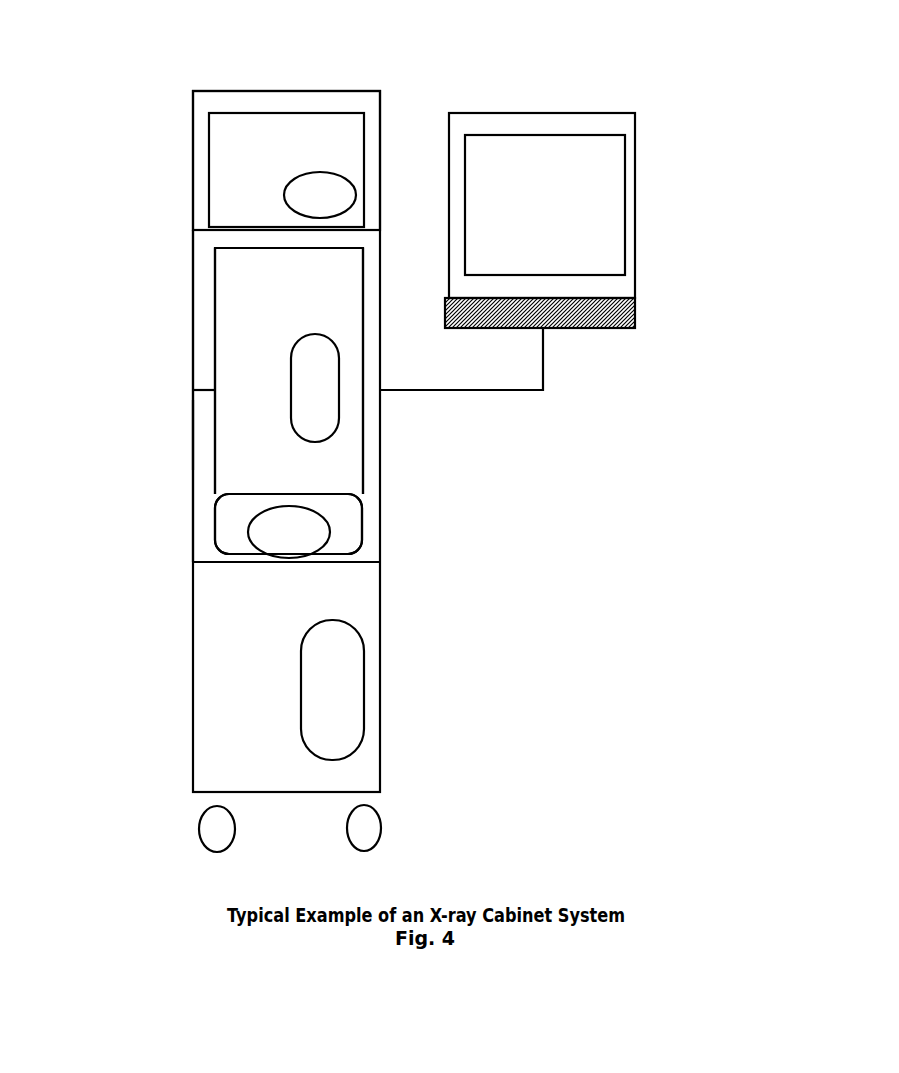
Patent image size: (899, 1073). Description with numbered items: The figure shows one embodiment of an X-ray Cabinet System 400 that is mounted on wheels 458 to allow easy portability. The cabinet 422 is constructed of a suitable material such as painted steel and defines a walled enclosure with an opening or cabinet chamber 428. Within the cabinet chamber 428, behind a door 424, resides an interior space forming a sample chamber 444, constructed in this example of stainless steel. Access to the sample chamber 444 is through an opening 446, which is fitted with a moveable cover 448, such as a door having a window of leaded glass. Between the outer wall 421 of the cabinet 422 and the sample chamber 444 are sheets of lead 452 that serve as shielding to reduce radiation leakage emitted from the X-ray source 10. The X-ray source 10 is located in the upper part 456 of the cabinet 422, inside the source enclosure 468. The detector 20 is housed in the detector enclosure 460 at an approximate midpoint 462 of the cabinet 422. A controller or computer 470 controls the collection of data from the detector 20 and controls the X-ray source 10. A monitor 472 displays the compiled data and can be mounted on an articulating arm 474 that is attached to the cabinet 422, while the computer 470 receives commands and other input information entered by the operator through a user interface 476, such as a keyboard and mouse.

The X-ray Cabinet System 400 is at (295, 80).
The X-ray source 10 is at (320, 195).
The detector 20 is at (289, 532).
The source enclosure 468 is at (192, 148).
The upper part 456 is at (380, 140).
The sample chamber 444 is at (275, 322).
The sheets of lead 452 is at (203, 323).
The cabinet 422 is at (191, 351).
The moveable cover 448 is at (193, 390).
The outer wall 421 is at (191, 432).
The cabinet chamber 428 is at (215, 493).
The approximate midpoint 462 is at (192, 512).
The opening 446 is at (337, 350).
The door 424 is at (357, 430).
The detector enclosure 460 is at (348, 534).
The computer 470 is at (364, 690).
The wheels 458 is at (382, 828).
The monitor 472 is at (593, 207).
The user interface 476 is at (635, 315).
The articulating arm 474 is at (543, 378).